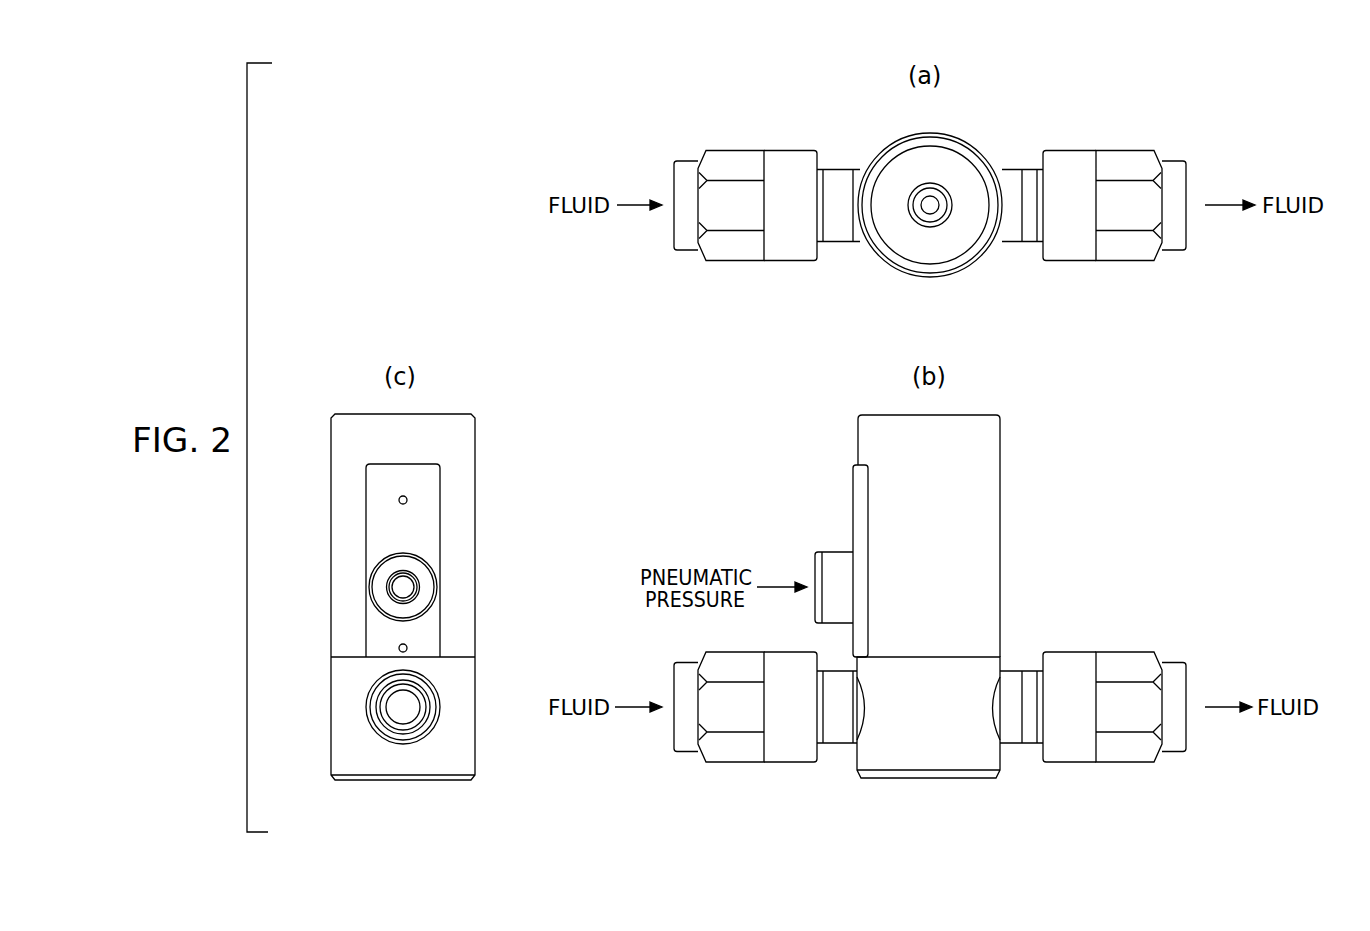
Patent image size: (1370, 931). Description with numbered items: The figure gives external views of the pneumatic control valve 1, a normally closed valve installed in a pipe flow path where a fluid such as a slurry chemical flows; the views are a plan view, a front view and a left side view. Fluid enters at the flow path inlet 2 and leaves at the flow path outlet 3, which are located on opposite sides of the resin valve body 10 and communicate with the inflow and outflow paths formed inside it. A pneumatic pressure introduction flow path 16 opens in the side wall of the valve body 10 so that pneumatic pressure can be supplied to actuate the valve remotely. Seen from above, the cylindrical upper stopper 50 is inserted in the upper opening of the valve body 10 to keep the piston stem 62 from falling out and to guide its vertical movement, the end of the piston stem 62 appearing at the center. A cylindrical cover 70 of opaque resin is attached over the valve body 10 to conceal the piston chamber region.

The pneumatic control valve 1 is at (1024, 110).
The flow path inlet 2 is at (674, 233).
The flow path outlet 3 is at (1186, 235).
The valve body 10 is at (882, 260).
The pneumatic pressure introduction flow path 16 is at (404, 586).
The upper stopper 50 is at (960, 235).
The piston stem 62 is at (932, 220).
The cylindrical cover 70 is at (890, 157).